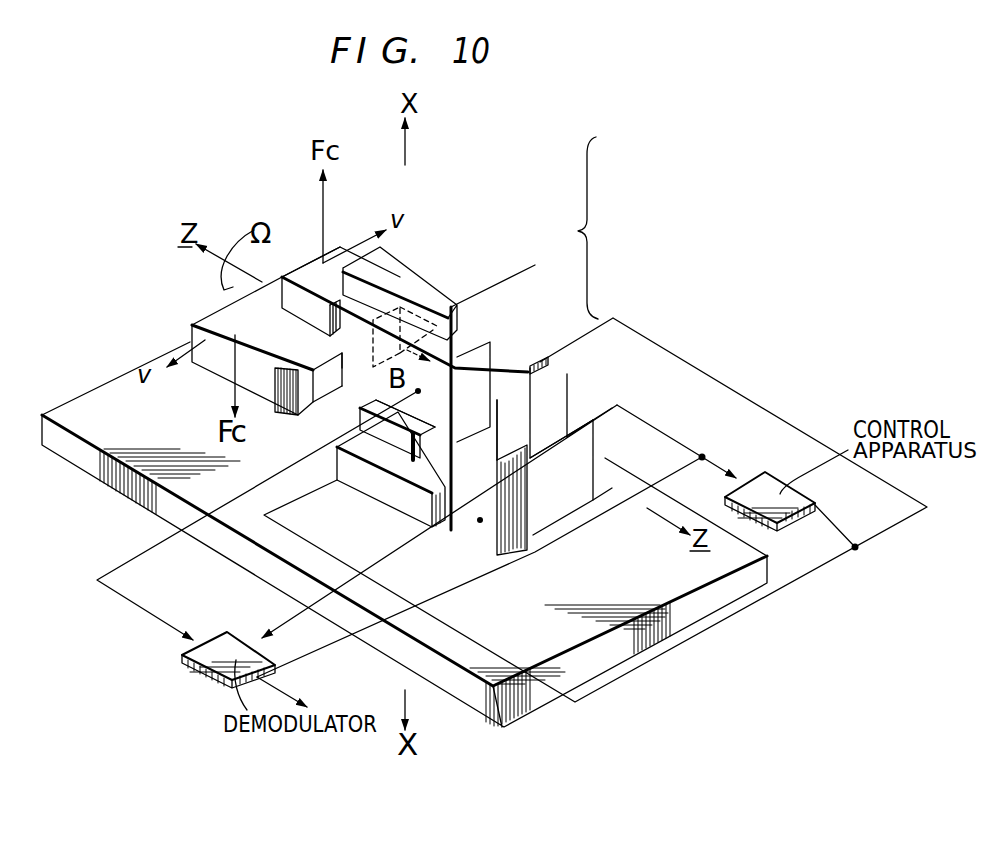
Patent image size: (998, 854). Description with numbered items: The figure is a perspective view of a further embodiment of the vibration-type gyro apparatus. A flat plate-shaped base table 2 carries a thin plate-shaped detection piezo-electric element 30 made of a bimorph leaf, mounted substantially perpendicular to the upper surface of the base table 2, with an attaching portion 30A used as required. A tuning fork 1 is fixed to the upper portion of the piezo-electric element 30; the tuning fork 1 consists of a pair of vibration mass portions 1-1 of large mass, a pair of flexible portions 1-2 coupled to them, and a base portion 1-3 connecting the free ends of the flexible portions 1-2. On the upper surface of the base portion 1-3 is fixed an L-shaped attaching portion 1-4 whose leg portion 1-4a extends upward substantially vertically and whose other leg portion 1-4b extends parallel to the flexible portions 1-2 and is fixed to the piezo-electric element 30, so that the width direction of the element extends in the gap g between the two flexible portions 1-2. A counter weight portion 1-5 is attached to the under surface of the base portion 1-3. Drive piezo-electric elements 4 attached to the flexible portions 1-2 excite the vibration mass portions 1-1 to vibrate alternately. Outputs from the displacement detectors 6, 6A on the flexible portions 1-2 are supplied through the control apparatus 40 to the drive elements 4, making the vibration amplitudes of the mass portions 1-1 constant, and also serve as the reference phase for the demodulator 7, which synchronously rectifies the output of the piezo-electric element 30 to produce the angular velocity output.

The tuning fork 1 is at (615, 250).
The vibration mass portions 1-1 is at (257, 302).
The flexible portions 1-2 is at (457, 357).
The base portion 1-3 is at (495, 430).
The L-shaped attaching portion 1-4 is at (415, 440).
The leg portion 1-4a is at (550, 403).
The leg portion 1-4b is at (440, 258).
The counter weight portion 1-5 is at (548, 505).
The base table 2 is at (490, 698).
The drive piezo-electric elements 4 is at (396, 470).
The displacement detector 6 is at (434, 494).
The displacement detector 6A is at (582, 424).
The demodulator 7 is at (208, 674).
The detection piezo-electric element 30 is at (378, 380).
The attaching portion 30A is at (442, 530).
The control apparatus 40 is at (762, 480).
The gap g is at (338, 366).